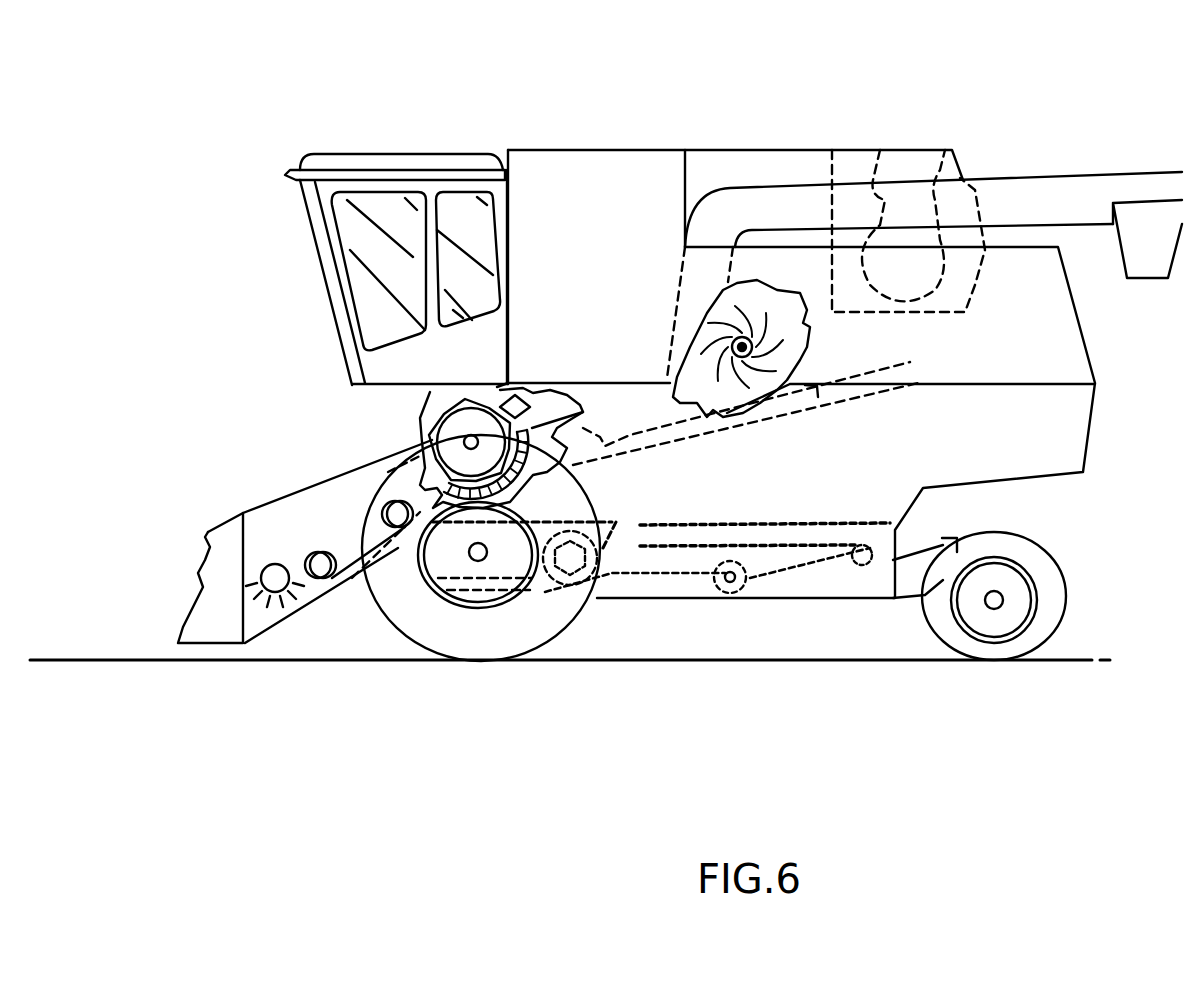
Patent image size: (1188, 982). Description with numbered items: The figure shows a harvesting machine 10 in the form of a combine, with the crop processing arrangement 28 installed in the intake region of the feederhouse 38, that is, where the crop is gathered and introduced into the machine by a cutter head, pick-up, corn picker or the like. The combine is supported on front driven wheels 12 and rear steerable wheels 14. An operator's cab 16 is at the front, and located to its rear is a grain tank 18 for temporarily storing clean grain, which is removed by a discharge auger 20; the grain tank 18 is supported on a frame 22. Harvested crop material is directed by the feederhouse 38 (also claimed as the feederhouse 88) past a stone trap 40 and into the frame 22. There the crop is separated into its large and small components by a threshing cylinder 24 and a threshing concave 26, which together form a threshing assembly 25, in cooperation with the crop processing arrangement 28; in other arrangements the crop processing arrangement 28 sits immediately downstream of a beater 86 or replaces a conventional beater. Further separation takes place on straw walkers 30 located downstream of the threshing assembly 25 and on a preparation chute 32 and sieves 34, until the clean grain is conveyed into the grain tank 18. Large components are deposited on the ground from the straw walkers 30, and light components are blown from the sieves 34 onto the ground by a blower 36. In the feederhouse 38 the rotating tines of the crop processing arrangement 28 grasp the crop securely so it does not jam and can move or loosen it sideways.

The harvesting machine 10 is at (735, 135).
The front driven wheels 12 is at (519, 660).
The rear steerable wheels 14 is at (1028, 652).
The operator's cab 16 is at (348, 160).
The grain tank 18 is at (610, 150).
The discharge auger 20 is at (1022, 178).
The frame 22 is at (889, 463).
The threshing cylinder 24 is at (430, 425).
The threshing assembly 25 is at (385, 449).
The threshing concave 26 is at (560, 466).
The crop processing arrangement 28 is at (278, 594).
The straw walkers 30 is at (907, 384).
The preparation chute 32 is at (607, 527).
The sieves 34 is at (774, 522).
The blower 36 is at (573, 598).
The feederhouse 38 is at (293, 515).
The stone trap 40 is at (385, 514).
The beater 86 is at (497, 387).
The feederhouse 88 is at (262, 522).